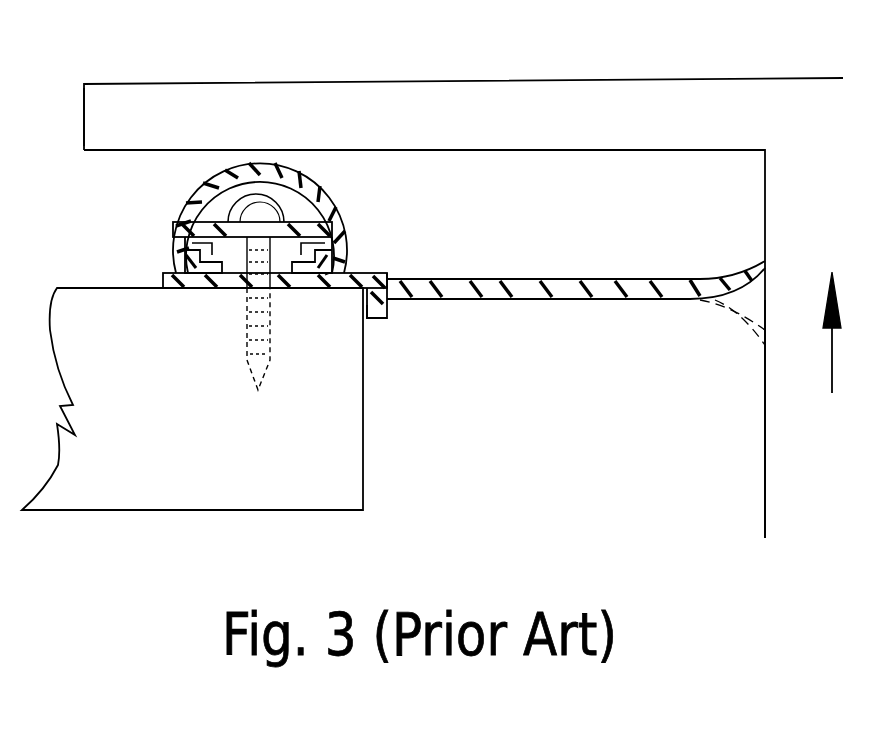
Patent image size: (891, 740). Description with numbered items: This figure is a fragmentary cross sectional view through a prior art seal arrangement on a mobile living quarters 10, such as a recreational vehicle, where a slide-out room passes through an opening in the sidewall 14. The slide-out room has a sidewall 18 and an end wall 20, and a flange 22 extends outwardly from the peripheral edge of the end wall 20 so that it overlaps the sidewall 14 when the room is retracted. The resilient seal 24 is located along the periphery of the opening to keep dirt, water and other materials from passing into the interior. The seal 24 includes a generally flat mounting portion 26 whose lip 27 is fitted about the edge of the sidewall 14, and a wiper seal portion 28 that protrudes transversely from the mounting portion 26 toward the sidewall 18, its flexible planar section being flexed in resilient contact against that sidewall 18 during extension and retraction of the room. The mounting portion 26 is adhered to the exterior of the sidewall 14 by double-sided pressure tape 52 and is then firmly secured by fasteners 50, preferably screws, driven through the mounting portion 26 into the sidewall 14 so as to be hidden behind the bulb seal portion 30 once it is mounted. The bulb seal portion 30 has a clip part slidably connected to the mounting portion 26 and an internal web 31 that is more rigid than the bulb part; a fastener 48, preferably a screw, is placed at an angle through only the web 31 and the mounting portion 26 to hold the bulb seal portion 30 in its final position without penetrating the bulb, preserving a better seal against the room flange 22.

The mobile living quarters 10 is at (858, 237).
The sidewall 14 is at (348, 473).
The sidewall 18 is at (765, 438).
The end wall 20 is at (740, 78).
The flange 22 is at (83, 117).
The resilient seal 24 is at (330, 290).
The mounting portion 26 is at (385, 275).
The lip 27 is at (385, 318).
The wiper seal portion 28 is at (573, 300).
The bulb seal portion 30 is at (192, 190).
The web 31 is at (205, 205).
The fastener 48 is at (280, 205).
The fasteners 50 is at (235, 290).
The pressure tape 52 is at (200, 288).